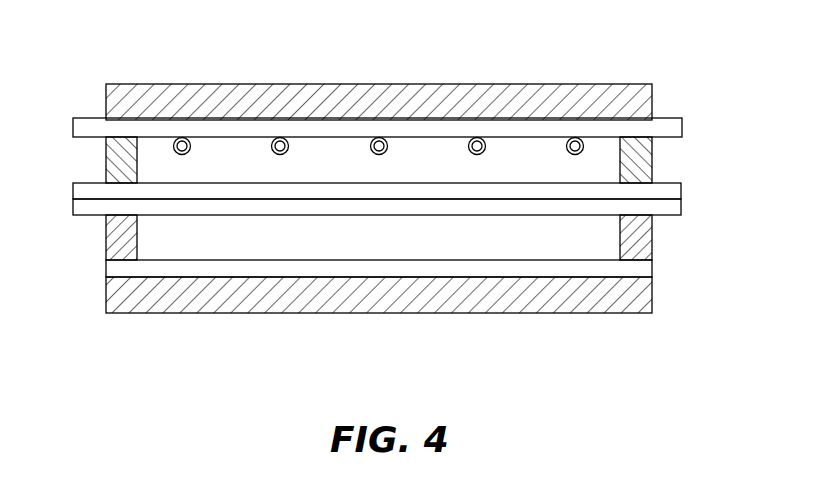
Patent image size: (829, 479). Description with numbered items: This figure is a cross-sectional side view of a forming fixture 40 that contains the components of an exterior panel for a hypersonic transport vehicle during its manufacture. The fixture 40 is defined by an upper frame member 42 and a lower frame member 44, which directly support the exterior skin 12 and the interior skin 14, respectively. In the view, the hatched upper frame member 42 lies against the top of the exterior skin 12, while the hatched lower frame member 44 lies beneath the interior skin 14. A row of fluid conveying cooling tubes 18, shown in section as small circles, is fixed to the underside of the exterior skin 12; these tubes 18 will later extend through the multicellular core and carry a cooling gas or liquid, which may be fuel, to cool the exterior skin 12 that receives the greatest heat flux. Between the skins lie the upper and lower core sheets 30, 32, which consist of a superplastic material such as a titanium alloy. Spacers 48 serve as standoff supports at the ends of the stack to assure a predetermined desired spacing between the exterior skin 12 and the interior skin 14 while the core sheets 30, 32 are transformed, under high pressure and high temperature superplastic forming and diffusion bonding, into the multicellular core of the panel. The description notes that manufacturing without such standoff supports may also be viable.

The fixture 40 is at (138, 58).
The upper frame member 42 is at (522, 84).
The exterior skin 12 is at (683, 128).
The cooling tubes 18 is at (183, 137).
The lower spacers 48 is at (105, 160).
The upper core sheet 30 is at (682, 189).
The lower core sheet 32 is at (682, 210).
The interior skin 14 is at (643, 263).
The lower frame member 44 is at (537, 314).